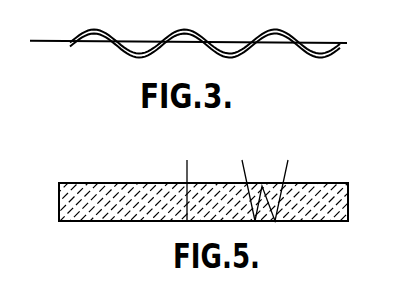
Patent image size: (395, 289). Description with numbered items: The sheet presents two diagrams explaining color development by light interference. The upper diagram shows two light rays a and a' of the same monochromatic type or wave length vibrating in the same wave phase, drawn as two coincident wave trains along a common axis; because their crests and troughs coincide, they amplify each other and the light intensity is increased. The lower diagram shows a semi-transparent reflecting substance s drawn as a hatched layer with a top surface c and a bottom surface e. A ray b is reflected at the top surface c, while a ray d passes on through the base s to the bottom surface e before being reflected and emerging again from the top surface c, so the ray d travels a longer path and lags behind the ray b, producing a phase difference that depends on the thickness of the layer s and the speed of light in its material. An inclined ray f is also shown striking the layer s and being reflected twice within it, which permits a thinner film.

In FIG. 3, the light ray a is at (205, 27).
In FIG. 3, the light ray a' is at (205, 57).
In FIG. 5, the reflecting substance s is at (92, 197).
In FIG. 5, the top surface c is at (124, 183).
In FIG. 5, the light ray b is at (140, 183).
In FIG. 5, the light ray d is at (187, 182).
In FIG. 5, the bottom surface e is at (113, 221).
In FIG. 5, the inclined ray f is at (265, 181).